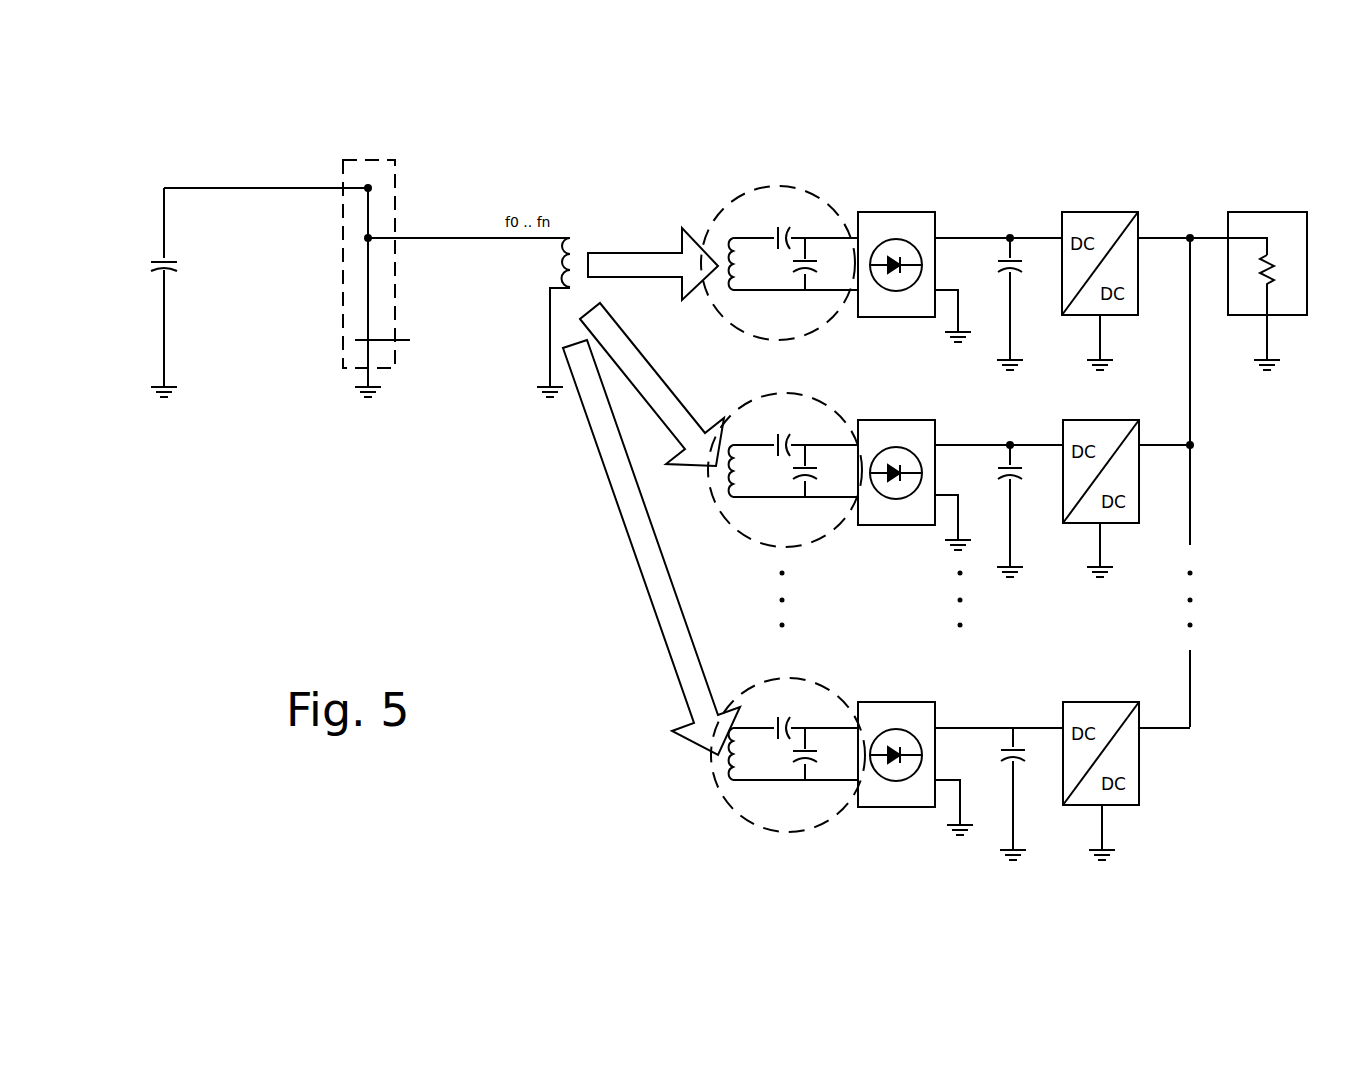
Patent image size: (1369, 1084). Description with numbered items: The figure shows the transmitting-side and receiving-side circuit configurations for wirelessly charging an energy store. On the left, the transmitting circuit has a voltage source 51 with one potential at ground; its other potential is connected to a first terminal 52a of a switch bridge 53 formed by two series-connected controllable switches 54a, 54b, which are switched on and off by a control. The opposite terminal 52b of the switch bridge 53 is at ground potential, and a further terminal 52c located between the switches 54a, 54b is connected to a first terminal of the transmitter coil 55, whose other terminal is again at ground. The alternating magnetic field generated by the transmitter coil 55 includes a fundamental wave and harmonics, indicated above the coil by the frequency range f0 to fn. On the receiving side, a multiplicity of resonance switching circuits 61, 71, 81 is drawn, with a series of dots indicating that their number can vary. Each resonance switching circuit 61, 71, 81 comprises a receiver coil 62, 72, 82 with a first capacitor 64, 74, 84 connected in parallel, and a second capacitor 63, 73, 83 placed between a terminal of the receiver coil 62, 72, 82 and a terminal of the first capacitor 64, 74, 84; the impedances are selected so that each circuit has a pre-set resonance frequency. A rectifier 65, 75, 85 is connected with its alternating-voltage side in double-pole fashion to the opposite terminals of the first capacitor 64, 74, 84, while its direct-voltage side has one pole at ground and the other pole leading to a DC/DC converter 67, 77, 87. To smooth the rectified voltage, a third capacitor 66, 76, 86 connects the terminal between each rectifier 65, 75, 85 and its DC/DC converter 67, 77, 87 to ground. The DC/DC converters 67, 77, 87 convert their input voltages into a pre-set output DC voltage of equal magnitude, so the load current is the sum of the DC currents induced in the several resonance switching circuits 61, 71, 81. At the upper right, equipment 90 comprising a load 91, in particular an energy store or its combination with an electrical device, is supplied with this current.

The voltage source 51 is at (150, 266).
The first terminal 52a is at (368, 188).
The opposite terminal 52b is at (415, 344).
The further terminal 52c is at (368, 238).
The switch bridge 53 is at (343, 298).
The switch 54a is at (368, 208).
The switch 54b is at (368, 318).
The transmitter coil 55 is at (575, 236).
The resonance switching circuit 61 is at (778, 255).
The receiver coil 62 is at (728, 316).
The second capacitor 63 is at (775, 228).
The first capacitor 64 is at (792, 280).
The rectifier 65 is at (880, 210).
The third capacitor 66 is at (1010, 256).
The DC/DC converter 67 is at (1105, 212).
The resonance switching circuit 71 is at (784, 470).
The receiver coil 72 is at (724, 518).
The second capacitor 73 is at (744, 408).
The first capacitor 74 is at (800, 486).
The rectifier 75 is at (885, 525).
The third capacitor 76 is at (1012, 480).
The DC/DC converter 77 is at (1110, 418).
The resonance switching circuit 81 is at (770, 764).
The receiver coil 82 is at (722, 800).
The second capacitor 83 is at (778, 720).
The first capacitor 84 is at (800, 768).
The rectifier 85 is at (893, 700).
The third capacitor 86 is at (1013, 746).
The DC/DC converter 87 is at (1100, 700).
The equipment 90 is at (1289, 271).
The load 91 is at (1275, 275).